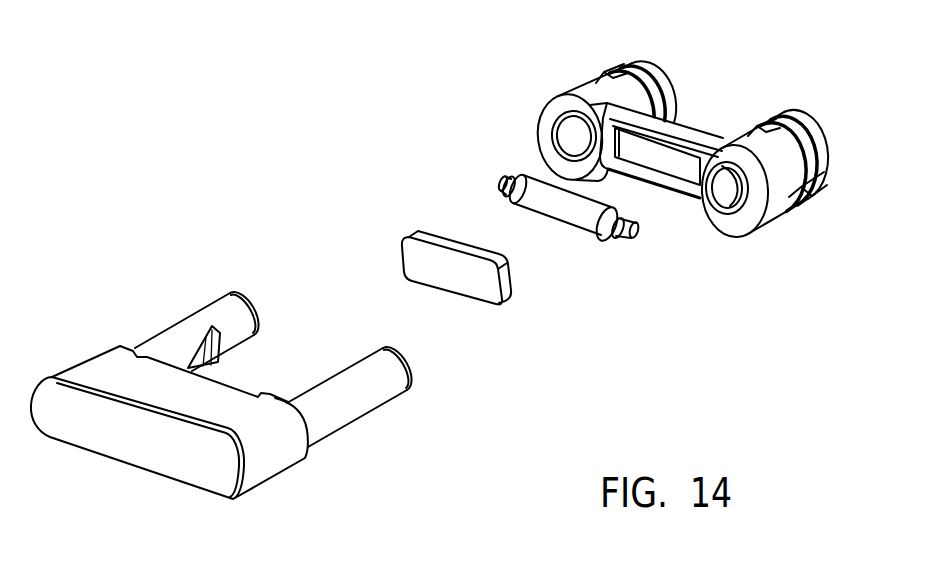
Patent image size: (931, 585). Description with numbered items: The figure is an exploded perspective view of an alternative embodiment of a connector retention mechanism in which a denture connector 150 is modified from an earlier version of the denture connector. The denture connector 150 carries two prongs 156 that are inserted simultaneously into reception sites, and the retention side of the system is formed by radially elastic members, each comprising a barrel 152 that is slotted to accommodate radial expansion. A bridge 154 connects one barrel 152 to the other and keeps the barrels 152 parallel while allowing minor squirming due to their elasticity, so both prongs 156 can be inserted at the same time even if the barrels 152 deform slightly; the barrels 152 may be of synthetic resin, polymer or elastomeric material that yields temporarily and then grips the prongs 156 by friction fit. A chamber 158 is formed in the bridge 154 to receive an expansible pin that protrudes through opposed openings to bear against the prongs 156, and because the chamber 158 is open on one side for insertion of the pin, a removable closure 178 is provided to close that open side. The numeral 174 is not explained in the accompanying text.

The denture connector 150 is at (250, 408).
The barrel 152 is at (566, 66).
The bridge 154 is at (696, 121).
The prong 156 is at (208, 312).
The chamber 158 is at (672, 200).
The cap 174 is at (157, 449).
The removable closure 178 is at (431, 273).